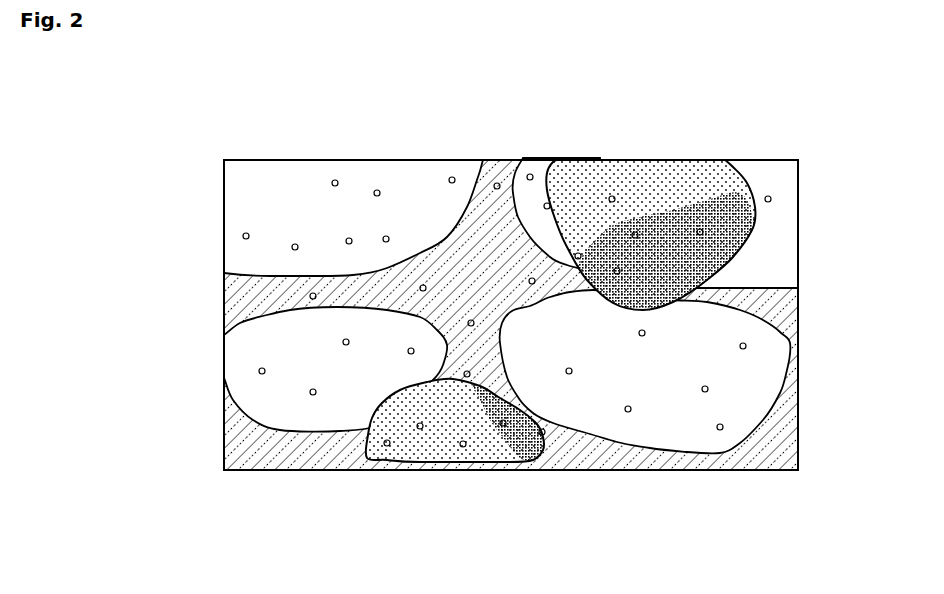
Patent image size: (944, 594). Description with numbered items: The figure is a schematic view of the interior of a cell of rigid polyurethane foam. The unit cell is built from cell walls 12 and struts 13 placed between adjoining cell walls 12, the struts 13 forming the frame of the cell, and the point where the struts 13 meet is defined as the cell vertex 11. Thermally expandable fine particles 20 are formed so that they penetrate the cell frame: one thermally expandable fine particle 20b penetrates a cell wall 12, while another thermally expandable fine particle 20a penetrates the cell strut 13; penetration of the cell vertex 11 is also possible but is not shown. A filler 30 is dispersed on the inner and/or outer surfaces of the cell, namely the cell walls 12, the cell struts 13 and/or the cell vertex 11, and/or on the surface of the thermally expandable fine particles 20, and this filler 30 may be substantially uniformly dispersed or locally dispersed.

The cell vertex 11 is at (468, 268).
The cell wall 12 is at (270, 190).
The strut 13 is at (343, 293).
The thermally expandable fine particle 20 is at (561, 328).
The thermally expandable fine particle 20a is at (418, 455).
The thermally expandable fine particle 20b is at (643, 185).
The filler 30 is at (771, 199).